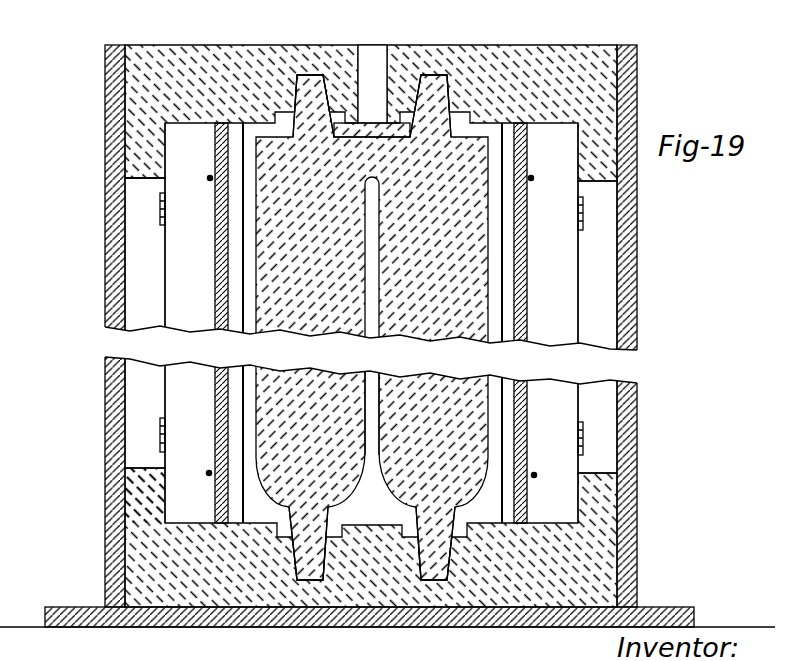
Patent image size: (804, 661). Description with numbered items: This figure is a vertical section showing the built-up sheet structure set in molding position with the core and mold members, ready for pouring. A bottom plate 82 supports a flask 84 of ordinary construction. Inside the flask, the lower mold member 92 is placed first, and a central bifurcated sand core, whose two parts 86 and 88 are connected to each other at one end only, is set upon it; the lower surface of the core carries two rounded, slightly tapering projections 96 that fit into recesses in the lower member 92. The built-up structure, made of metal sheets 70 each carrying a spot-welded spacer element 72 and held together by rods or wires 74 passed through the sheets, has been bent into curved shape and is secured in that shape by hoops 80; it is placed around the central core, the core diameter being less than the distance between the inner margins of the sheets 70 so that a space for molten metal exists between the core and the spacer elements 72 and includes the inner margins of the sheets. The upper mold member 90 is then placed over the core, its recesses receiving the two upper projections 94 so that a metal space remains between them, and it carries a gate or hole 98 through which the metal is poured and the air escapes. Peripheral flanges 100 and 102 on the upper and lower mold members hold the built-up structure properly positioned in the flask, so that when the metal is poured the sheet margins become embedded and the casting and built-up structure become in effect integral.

The metal sheet 70 is at (183, 313).
The spacer element 72 is at (217, 275).
The rod or wire 74 is at (208, 178).
The hoop 80 is at (162, 227).
The bottom plate 82 is at (93, 623).
The flask 84 is at (115, 547).
The core part 86 is at (278, 295).
The core part 88 is at (476, 332).
The upper mold member 90 is at (210, 55).
The lower mold member 92 is at (252, 600).
The upper projection 94 is at (430, 100).
The lower projection 96 is at (427, 528).
The gate 98 is at (375, 62).
The peripheral flange 100 is at (142, 176).
The peripheral flange 102 is at (145, 497).